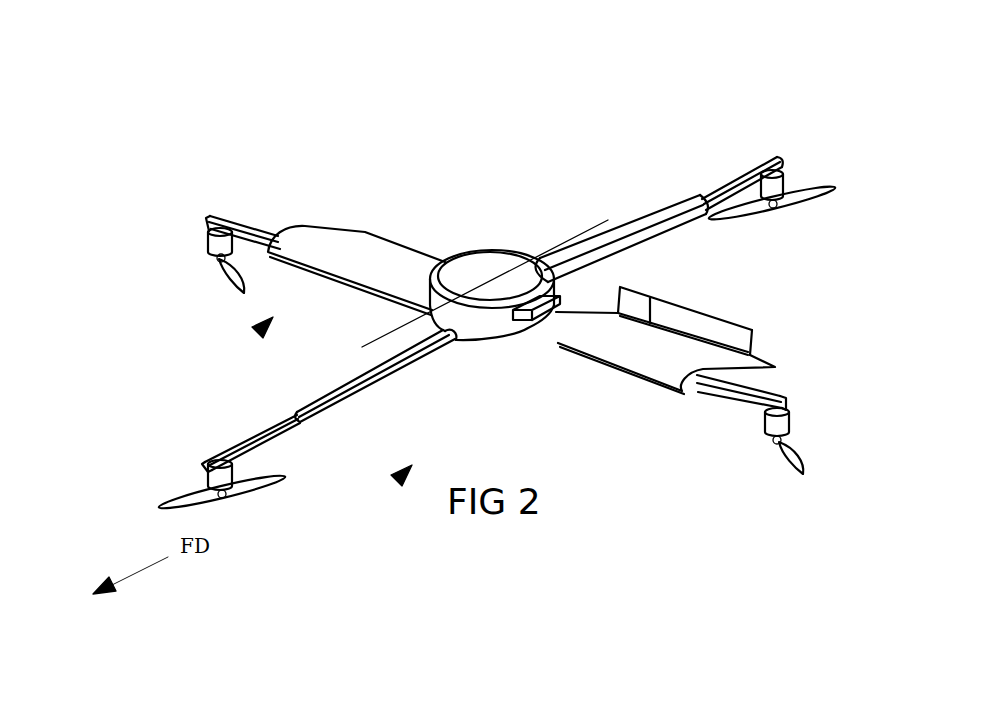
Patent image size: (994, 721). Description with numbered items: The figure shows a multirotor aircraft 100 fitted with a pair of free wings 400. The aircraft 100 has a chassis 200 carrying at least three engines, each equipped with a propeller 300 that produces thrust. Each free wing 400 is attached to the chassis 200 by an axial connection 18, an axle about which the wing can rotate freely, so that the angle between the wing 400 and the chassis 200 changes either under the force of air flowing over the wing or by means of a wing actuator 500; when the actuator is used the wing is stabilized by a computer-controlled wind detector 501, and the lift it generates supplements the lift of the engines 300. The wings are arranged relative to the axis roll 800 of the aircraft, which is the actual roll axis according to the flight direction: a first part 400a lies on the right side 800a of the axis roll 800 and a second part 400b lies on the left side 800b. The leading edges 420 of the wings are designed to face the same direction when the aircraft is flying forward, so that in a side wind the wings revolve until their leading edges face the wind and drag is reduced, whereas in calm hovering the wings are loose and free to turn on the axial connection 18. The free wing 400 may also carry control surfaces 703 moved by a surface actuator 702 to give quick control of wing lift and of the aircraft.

The multirotor aircraft 100 is at (494, 180).
The chassis 200 is at (582, 243).
The propeller 300 is at (783, 178).
The free wing 400 is at (346, 236).
The first part of the axial free wing 400a is at (303, 224).
The second part of the axial free wing 400b is at (657, 380).
The leading edge 420 is at (303, 282).
The wing actuator 500 is at (506, 323).
The computer-controlled wind detector 501 is at (422, 278).
The surface actuator 702 is at (645, 296).
The control surfaces 703 is at (728, 322).
The axis roll 800 is at (597, 208).
The right side of the axis roll 800a is at (258, 330).
The left side of the axis roll 800b is at (395, 478).
The axial connection 18 is at (690, 392).